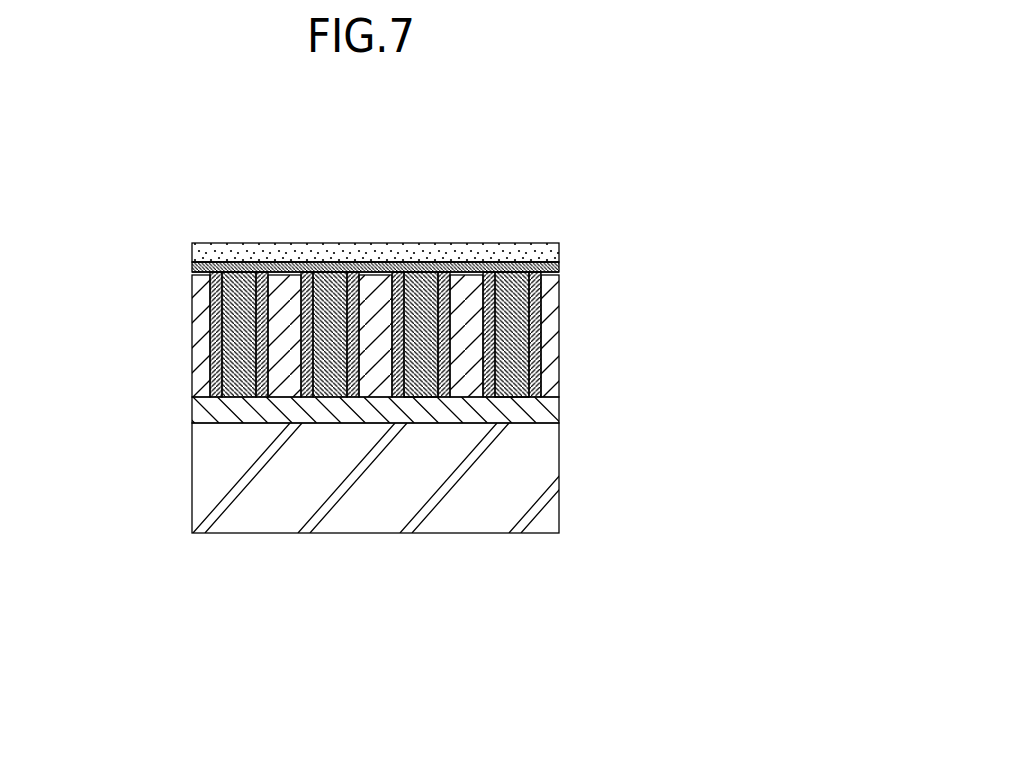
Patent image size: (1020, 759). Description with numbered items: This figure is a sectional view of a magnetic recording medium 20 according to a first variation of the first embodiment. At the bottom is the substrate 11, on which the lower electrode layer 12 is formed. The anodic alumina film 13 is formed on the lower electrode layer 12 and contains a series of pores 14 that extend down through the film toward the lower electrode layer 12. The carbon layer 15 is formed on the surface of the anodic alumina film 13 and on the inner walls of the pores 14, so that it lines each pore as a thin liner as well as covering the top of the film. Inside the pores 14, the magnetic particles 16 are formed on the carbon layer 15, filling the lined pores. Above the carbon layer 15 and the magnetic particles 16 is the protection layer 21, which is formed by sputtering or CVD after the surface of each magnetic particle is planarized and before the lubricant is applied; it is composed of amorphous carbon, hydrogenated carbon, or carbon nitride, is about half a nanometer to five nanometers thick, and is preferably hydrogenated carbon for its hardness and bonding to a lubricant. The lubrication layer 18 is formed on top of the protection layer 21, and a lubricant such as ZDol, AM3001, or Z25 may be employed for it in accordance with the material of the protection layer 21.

The substrate 11 is at (560, 474).
The lower electrode layer 12 is at (560, 408).
The anodic alumina film 13 is at (192, 348).
The pores 14 is at (416, 397).
The carbon layer 15 is at (192, 276).
The magnetic particles 16 is at (332, 262).
The lubrication layer 18 is at (460, 243).
The magnetic recording medium 20 is at (115, 131).
The protection layer 21 is at (192, 266).